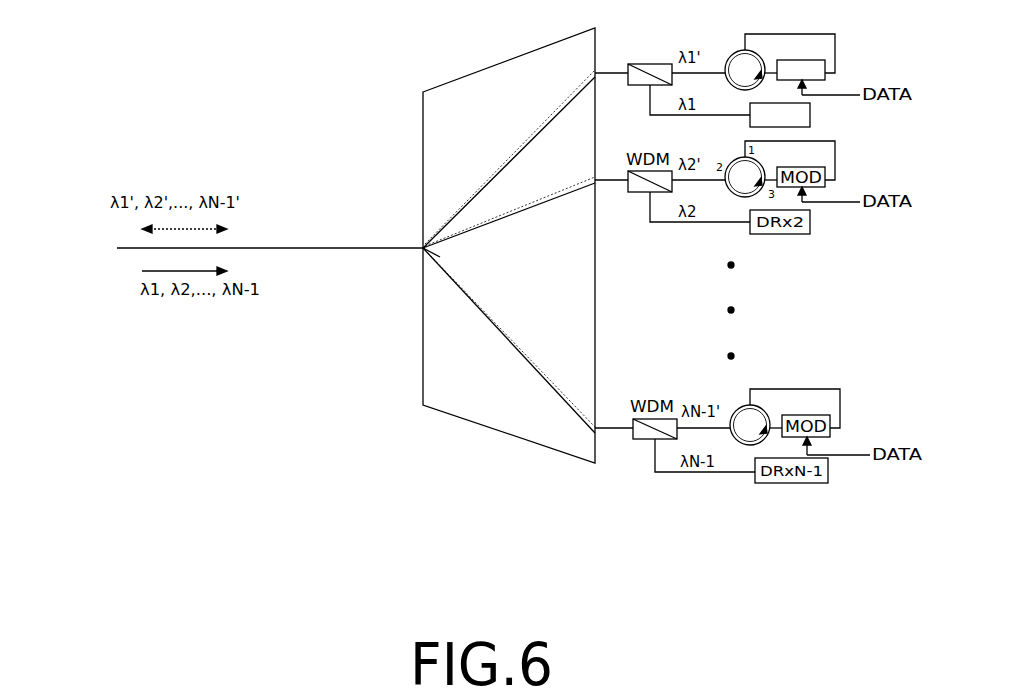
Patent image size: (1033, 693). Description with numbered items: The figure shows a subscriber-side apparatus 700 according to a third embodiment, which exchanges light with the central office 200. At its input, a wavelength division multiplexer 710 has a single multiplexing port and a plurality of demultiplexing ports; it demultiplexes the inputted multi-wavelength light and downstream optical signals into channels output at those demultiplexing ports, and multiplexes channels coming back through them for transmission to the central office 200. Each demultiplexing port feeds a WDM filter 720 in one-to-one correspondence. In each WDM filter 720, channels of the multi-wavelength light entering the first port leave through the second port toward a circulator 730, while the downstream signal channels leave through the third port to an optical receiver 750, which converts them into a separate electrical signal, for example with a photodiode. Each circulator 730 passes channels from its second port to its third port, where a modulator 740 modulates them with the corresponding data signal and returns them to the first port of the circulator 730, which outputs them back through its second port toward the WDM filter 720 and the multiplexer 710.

The central office 200 is at (59, 250).
The subscriber-side apparatus 700 is at (450, 521).
The wavelength division multiplexer 710 is at (423, 136).
The WDM filter 720 is at (637, 86).
The circulator 730 is at (730, 55).
The modulator 740 is at (827, 78).
The optical receiver 750 is at (810, 115).